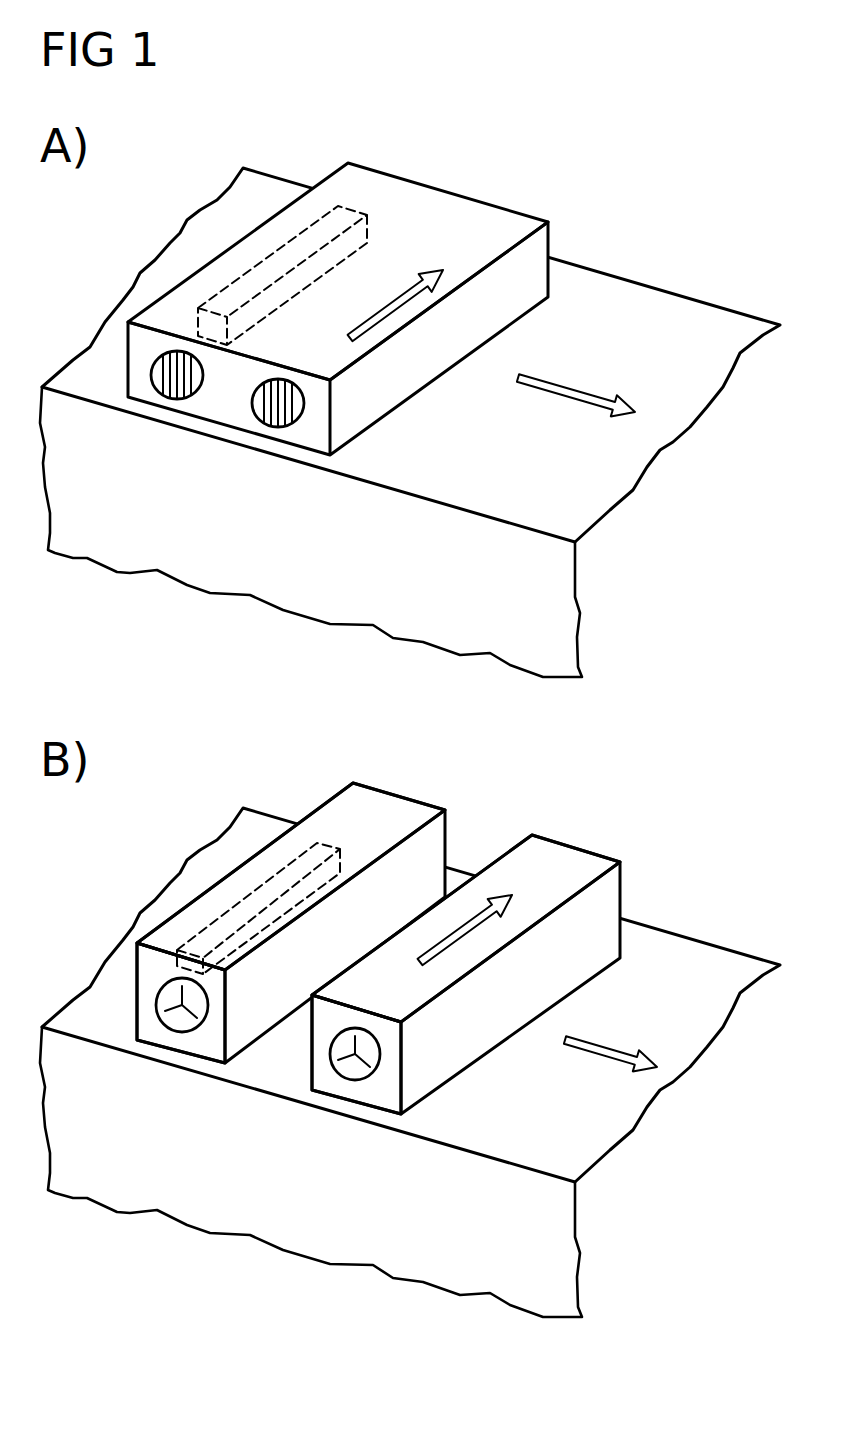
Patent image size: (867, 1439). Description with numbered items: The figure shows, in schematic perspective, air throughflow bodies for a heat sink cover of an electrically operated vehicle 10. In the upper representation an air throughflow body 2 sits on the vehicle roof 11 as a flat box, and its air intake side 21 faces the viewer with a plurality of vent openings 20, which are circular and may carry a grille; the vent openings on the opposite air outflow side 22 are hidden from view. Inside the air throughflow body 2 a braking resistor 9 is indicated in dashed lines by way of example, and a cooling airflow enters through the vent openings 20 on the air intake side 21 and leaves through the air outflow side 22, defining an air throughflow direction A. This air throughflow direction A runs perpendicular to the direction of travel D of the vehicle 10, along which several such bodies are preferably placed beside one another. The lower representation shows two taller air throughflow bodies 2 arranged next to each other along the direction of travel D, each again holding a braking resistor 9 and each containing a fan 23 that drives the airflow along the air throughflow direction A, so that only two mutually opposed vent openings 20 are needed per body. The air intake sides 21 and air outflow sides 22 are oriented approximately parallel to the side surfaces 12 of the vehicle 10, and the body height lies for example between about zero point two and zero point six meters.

The air throughflow body 2 is at (374, 653).
The braking resistor 9 is at (272, 262).
The electrically operated vehicle 10 is at (630, 293).
The vehicle roof 11 is at (414, 742).
The side surface 12 is at (560, 602).
The vent opening 20 is at (303, 758).
The air intake side 21 is at (309, 436).
The air outflow side 22 is at (417, 190).
The fan 23 is at (380, 1058).
The air throughflow direction A is at (397, 310).
The direction of travel D is at (567, 393).